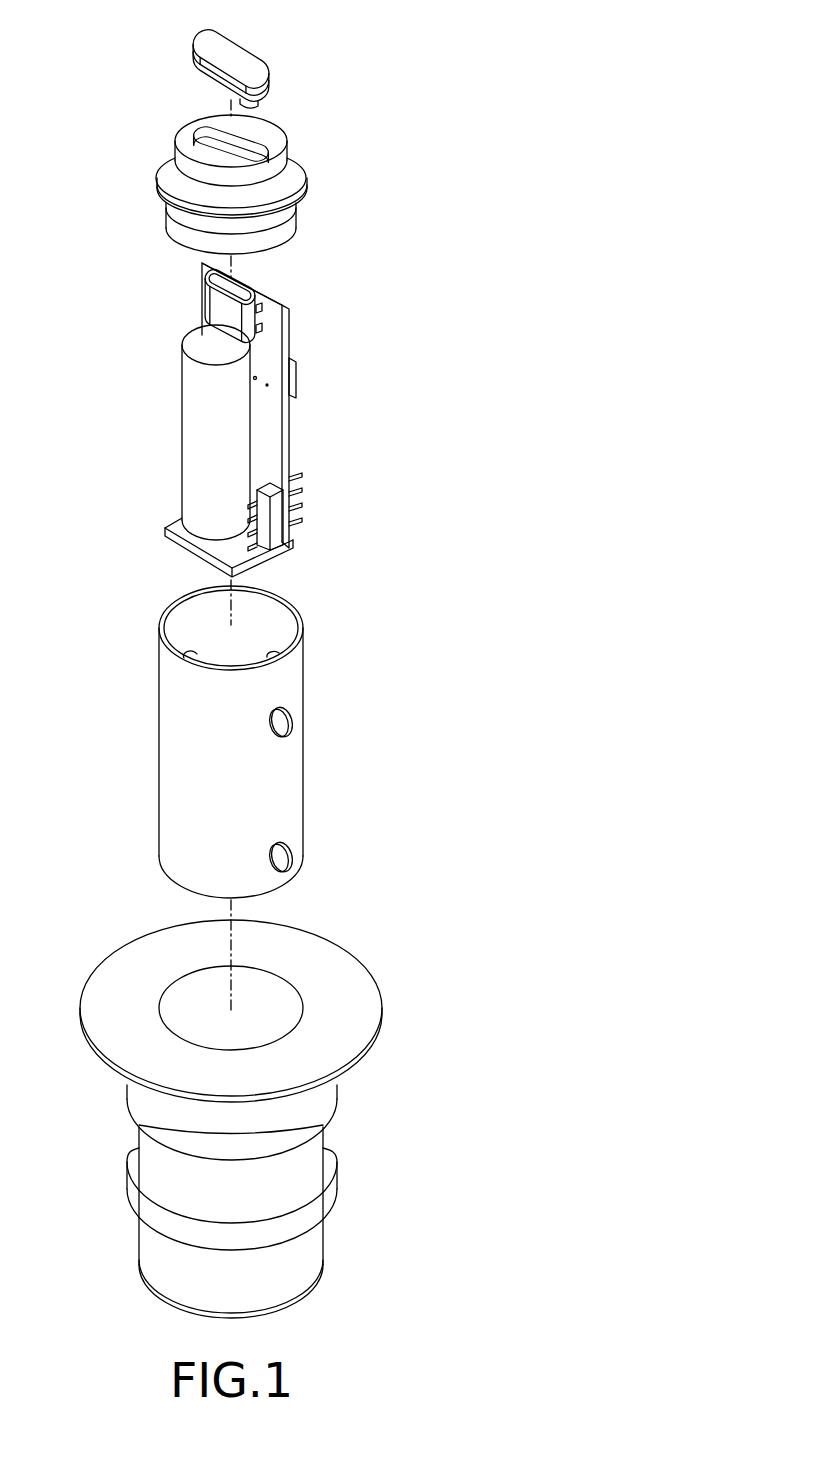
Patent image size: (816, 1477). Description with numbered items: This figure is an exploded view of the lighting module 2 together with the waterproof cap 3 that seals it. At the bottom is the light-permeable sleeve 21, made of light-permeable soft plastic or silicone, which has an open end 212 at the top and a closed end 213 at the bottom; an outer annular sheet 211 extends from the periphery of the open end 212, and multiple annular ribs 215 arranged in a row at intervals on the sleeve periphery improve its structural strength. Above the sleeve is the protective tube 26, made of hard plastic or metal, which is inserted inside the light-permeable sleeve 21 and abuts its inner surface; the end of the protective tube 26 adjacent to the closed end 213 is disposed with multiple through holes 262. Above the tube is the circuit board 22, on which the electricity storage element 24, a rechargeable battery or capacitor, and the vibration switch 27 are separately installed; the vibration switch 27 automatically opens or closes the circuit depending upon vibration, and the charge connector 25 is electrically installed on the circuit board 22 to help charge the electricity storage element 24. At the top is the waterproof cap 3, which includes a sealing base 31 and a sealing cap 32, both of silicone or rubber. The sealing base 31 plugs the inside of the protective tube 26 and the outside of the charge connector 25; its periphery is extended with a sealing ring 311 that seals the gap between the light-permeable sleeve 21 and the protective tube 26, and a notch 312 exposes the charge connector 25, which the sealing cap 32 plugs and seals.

The lighting module 2 is at (337, 1243).
The light-permeable sleeve 21 is at (167, 1170).
The outer annular sheet 211 is at (352, 998).
The open end 212 is at (283, 990).
The closed end 213 is at (182, 1312).
The annular ribs 215 is at (328, 1197).
The circuit board 22 is at (285, 433).
The electricity storage element 24 is at (192, 423).
The charge connector 25 is at (213, 297).
The protective tube 26 is at (175, 755).
The through holes 262 is at (282, 723).
The vibration switch 27 is at (298, 377).
The waterproof cap 3 is at (350, 23).
The sealing base 31 is at (265, 133).
The sealing ring 311 is at (298, 202).
The notch 312 is at (203, 130).
The sealing cap 32 is at (240, 54).